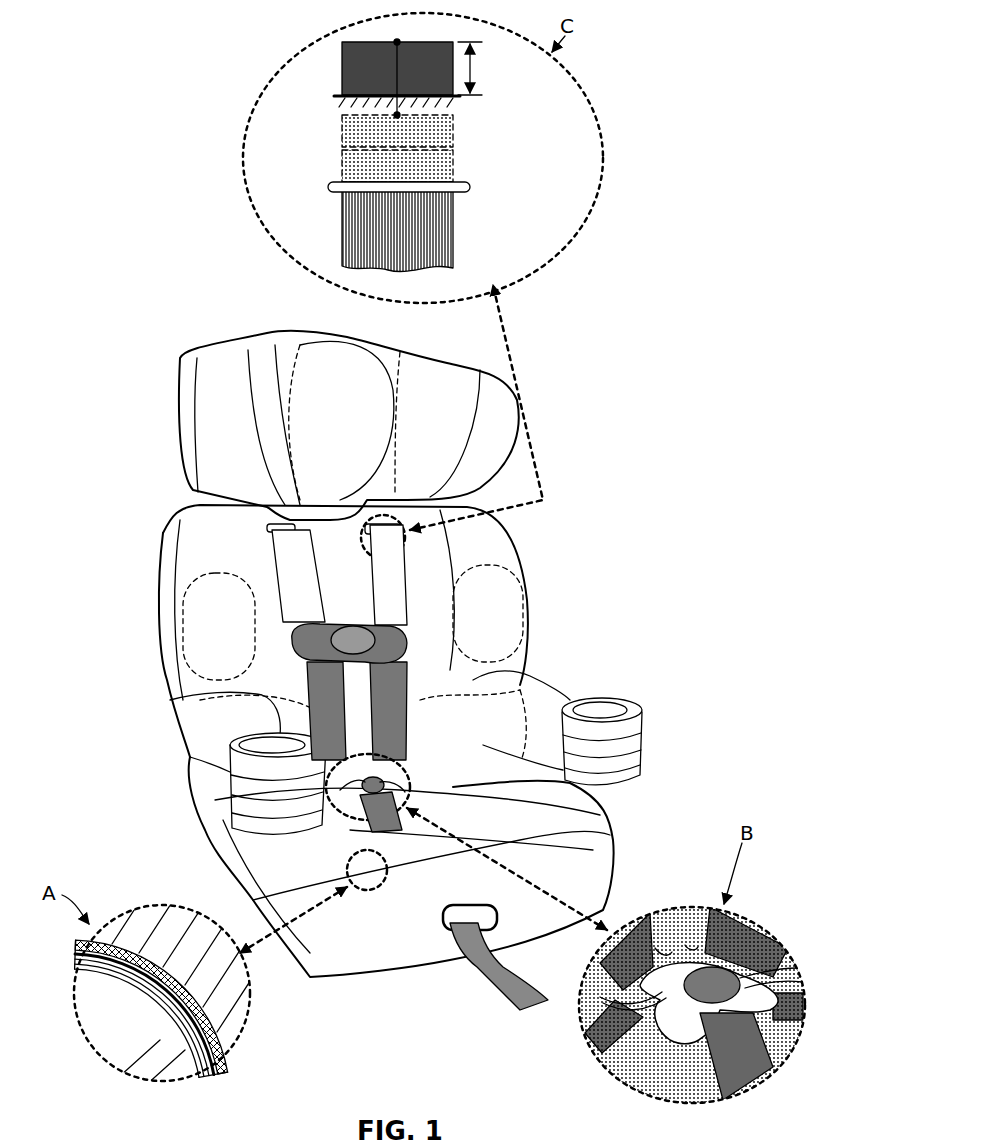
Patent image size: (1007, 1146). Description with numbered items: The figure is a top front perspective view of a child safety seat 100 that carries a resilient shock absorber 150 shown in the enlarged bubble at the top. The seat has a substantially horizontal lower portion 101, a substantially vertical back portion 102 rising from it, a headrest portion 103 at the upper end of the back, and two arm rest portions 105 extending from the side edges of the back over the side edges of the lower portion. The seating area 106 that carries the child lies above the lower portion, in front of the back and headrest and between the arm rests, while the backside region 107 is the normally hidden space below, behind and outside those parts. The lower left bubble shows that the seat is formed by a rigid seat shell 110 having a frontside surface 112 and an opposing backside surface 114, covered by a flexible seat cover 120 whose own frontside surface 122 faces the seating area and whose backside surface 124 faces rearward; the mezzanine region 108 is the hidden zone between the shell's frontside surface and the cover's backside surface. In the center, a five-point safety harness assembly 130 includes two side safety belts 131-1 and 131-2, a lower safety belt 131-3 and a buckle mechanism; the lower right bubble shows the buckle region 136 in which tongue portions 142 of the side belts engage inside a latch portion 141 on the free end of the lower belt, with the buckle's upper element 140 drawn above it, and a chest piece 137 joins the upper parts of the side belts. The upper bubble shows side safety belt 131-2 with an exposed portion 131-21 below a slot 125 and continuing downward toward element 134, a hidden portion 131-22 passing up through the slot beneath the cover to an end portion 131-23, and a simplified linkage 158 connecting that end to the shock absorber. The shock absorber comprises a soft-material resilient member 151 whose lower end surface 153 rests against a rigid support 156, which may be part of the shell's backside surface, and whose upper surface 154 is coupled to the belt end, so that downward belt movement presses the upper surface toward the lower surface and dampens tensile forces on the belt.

The child safety seat 100 is at (128, 318).
The lower portion 101 is at (613, 811).
The back portion 102 is at (522, 553).
The headrest portion 103 is at (176, 364).
The arm rest portions 105 is at (200, 742).
The seating area 106 is at (381, 733).
The backside region 107 is at (142, 614).
The mezzanine region 108 is at (145, 1006).
The seat shell 110 is at (161, 532).
The frontside surface 112 is at (73, 978).
The backside surface 114 is at (111, 1008).
The seat cover 120 is at (504, 226).
The frontside surface 122 is at (216, 1076).
The backside surface 124 is at (190, 1067).
The slot 125 is at (472, 177).
The five-point safety harness assembly 130 is at (248, 565).
The side safety belt 131-1 is at (280, 579).
The side safety belt 131-2 is at (408, 603).
The exposed portion 131-21 is at (340, 230).
The hidden portion 131-22 is at (340, 165).
The end portion 131-23 is at (340, 118).
The lower safety belt 131-3 is at (708, 1064).
The harness anchor 134 is at (388, 268).
The buckle 136 is at (690, 1004).
The chest piece 137 is at (285, 627).
The buckle tongue 140 is at (700, 916).
The latch portion 141 is at (656, 1018).
The tongue portions 142 is at (691, 939).
The resilient shock absorber 150 is at (318, 84).
The soft-material resilient member 151 is at (395, 57).
The lower end surface 153 is at (380, 78).
The upper surface 154 is at (381, 42).
The rigid support 156 is at (338, 93).
The linkage 158 is at (395, 110).